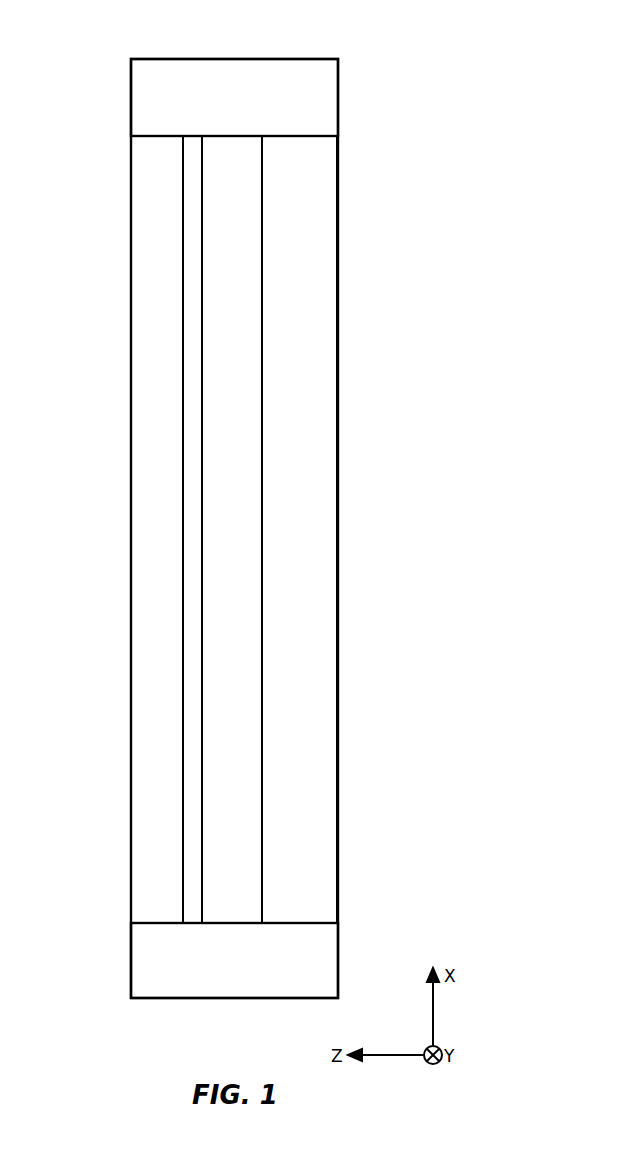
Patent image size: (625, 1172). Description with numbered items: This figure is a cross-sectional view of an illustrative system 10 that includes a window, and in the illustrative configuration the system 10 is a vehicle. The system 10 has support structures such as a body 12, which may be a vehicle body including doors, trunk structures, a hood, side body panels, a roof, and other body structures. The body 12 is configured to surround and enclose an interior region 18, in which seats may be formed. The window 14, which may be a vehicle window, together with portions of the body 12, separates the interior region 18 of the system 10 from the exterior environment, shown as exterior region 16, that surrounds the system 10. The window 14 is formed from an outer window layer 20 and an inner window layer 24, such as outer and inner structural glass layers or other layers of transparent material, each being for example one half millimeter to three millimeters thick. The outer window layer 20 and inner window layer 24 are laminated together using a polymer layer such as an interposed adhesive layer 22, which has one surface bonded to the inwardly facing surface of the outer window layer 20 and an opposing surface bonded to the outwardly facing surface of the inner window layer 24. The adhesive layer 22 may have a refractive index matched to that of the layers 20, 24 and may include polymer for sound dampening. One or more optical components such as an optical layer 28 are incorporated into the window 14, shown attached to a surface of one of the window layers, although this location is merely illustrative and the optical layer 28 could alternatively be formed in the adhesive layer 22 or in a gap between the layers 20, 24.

The system 10 is at (131, 40).
The body 12 is at (331, 93).
The window 14 is at (382, 344).
The exterior region 16 is at (91, 666).
The interior region 18 is at (375, 483).
The outer window layer 20 is at (140, 335).
The adhesive layer 22 is at (252, 651).
The inner window layer 24 is at (328, 206).
The optical layer 28 is at (192, 197).